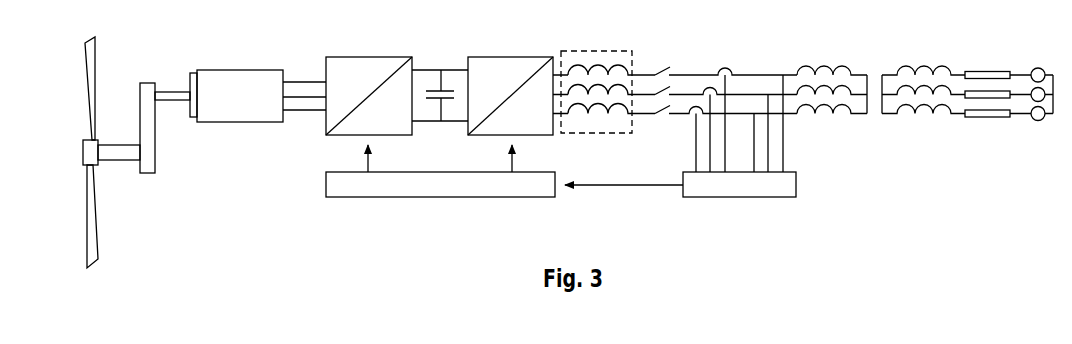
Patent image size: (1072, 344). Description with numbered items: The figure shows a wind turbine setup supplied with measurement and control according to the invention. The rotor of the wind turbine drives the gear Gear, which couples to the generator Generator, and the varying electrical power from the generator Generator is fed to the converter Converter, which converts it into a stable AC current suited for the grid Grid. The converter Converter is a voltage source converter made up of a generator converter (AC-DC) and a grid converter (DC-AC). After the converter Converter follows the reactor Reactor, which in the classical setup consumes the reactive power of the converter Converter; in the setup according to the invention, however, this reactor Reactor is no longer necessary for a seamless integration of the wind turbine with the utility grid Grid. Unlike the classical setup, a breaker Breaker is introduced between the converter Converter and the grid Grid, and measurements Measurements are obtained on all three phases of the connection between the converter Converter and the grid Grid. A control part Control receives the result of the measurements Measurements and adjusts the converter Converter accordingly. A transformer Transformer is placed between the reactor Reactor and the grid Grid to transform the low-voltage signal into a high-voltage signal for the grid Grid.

The gear Gear is at (148, 113).
The generator Generator is at (236, 81).
The converter Converter is at (439, 81).
The control part Control is at (440, 186).
The reactor Reactor is at (608, 80).
The breaker Breaker is at (672, 71).
The measurements Measurements is at (682, 150).
The transformer Transformer is at (881, 90).
The grid Grid is at (1009, 81).